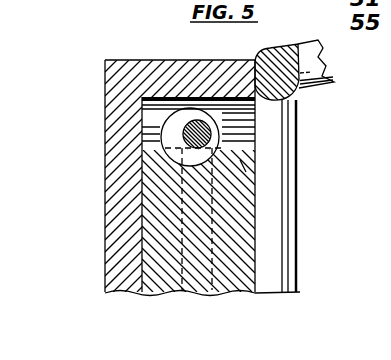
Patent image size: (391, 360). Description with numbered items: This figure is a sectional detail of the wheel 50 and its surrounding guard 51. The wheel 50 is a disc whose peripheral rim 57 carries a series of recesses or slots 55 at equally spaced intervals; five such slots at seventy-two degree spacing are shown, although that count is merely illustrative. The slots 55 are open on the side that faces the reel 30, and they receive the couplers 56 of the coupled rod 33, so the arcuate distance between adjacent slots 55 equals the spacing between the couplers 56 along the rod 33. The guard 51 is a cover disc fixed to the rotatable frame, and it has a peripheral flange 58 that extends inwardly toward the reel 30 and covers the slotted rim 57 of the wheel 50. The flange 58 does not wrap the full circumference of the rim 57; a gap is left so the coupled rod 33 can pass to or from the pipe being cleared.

The reel 30 is at (308, 182).
The coupled rod 33 is at (193, 122).
The wheel 50 is at (166, 275).
The guard 51 is at (110, 201).
The slots 55 is at (243, 168).
The couplers 56 is at (170, 124).
The peripheral rim 57 is at (147, 147).
The peripheral flange 58 is at (168, 68).